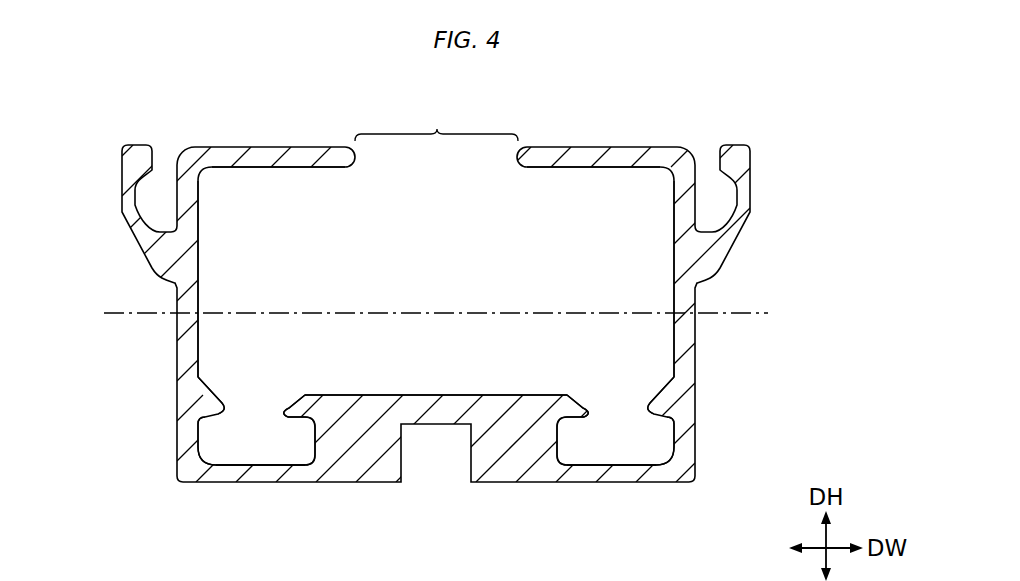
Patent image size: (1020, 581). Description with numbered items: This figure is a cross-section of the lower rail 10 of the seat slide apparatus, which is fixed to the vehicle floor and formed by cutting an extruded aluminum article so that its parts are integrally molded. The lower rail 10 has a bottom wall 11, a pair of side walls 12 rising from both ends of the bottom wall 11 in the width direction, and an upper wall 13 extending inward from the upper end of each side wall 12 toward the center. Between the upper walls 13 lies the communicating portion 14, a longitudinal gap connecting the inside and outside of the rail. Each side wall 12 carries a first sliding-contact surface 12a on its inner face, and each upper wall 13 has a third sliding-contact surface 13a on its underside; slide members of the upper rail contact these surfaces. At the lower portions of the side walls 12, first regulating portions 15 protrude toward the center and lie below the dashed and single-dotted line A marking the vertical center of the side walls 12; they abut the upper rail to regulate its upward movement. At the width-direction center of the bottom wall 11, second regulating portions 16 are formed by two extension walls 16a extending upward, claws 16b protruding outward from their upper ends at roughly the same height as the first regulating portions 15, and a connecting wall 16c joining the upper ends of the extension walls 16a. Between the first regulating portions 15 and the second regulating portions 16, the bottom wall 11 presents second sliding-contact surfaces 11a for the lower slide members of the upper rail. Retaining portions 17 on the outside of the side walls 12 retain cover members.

The lower rail 10 is at (812, 106).
The bottom wall 11 is at (370, 483).
The second sliding-contact surfaces 11a is at (247, 466).
The side walls 12 is at (177, 350).
The first sliding-contact surfaces 12a is at (198, 243).
The upper wall 13 is at (242, 147).
The third sliding-contact surfaces 13a is at (313, 168).
The communicating portion 14 is at (436, 122).
The first regulating portions 15 is at (215, 398).
The second regulating portions 16 is at (291, 403).
The extension walls 16a is at (372, 394).
The claws 16b is at (290, 407).
The connecting wall 16c is at (445, 402).
The retaining portions 17 is at (123, 150).
The dashed and single-dotted line A is at (758, 313).